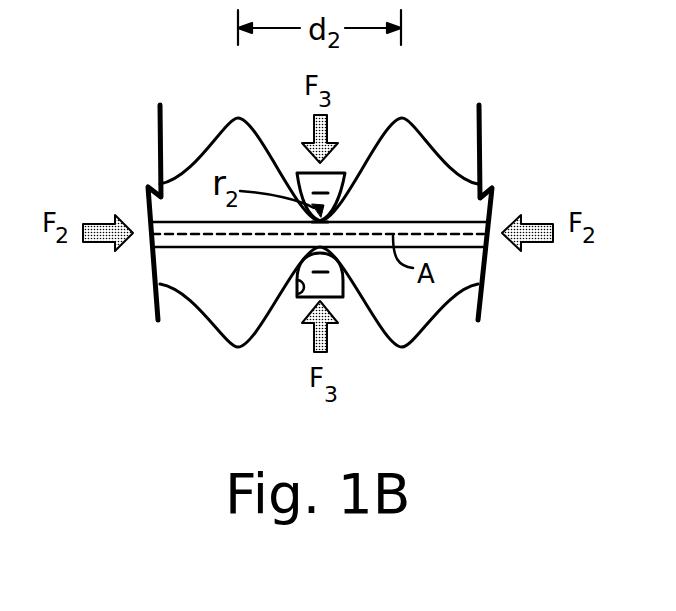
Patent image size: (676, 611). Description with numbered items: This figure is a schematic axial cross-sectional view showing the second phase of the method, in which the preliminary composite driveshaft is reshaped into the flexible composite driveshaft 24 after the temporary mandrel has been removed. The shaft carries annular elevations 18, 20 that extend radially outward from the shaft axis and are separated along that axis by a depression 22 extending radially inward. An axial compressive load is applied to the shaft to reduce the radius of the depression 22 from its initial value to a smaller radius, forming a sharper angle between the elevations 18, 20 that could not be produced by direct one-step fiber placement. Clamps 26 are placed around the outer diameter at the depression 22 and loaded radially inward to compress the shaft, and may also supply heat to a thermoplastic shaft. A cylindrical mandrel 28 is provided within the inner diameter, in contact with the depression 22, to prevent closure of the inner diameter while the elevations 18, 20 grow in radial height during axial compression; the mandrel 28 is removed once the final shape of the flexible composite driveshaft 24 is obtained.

The elevation 18 is at (238, 117).
The elevation 20 is at (402, 118).
The depression 22 is at (322, 221).
The flexible composite driveshaft 24 is at (197, 163).
The clamp 26 is at (328, 182).
The cylindrical mandrel 28 is at (192, 247).